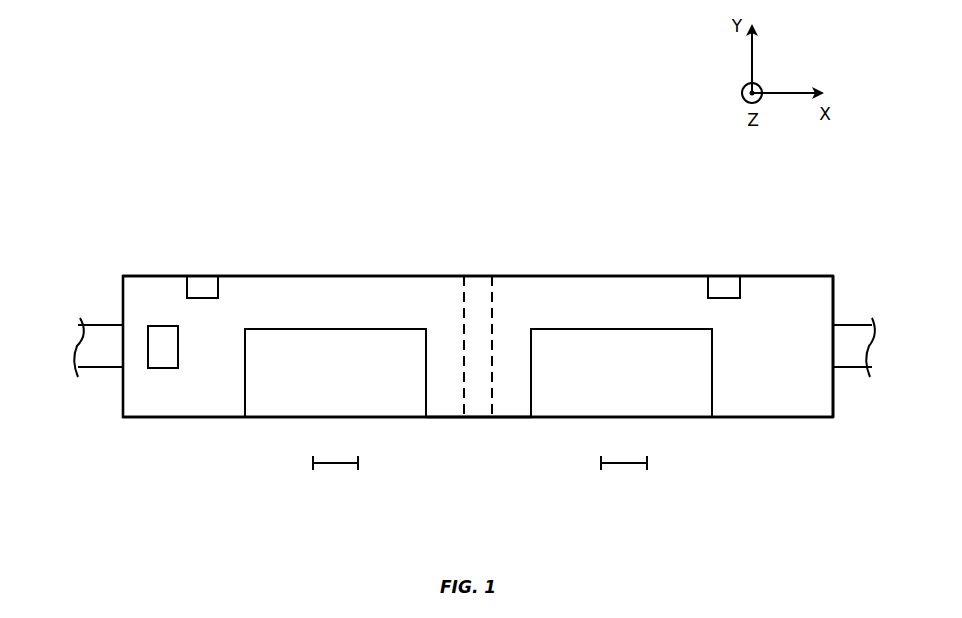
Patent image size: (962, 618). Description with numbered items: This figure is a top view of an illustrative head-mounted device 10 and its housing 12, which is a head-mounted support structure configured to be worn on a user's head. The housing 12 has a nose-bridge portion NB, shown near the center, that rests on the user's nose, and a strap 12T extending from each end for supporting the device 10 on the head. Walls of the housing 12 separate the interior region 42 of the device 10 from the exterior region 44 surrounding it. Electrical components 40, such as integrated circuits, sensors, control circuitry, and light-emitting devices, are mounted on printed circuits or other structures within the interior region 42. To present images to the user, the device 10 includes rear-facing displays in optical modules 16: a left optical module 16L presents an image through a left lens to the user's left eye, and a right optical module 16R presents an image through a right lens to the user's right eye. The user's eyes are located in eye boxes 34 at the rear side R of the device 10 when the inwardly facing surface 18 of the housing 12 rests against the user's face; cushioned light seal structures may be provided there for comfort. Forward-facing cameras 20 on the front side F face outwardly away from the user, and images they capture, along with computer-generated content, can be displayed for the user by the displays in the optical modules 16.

The head-mounted device 10 is at (786, 484).
The housing 12 is at (148, 418).
The strap 12T is at (93, 349).
The optical modules 16 is at (337, 325).
The left optical module 16L is at (245, 385).
The right optical module 16R is at (712, 385).
The inwardly facing surface 18 is at (810, 418).
The forward-facing cameras 20 is at (203, 288).
The eye box 34 is at (313, 462).
The electrical components 40 is at (155, 368).
The interior region 42 is at (273, 288).
The exterior region 44 is at (188, 141).
The front side F is at (546, 250).
The rear side R is at (401, 471).
The nose-bridge portion NB is at (464, 424).